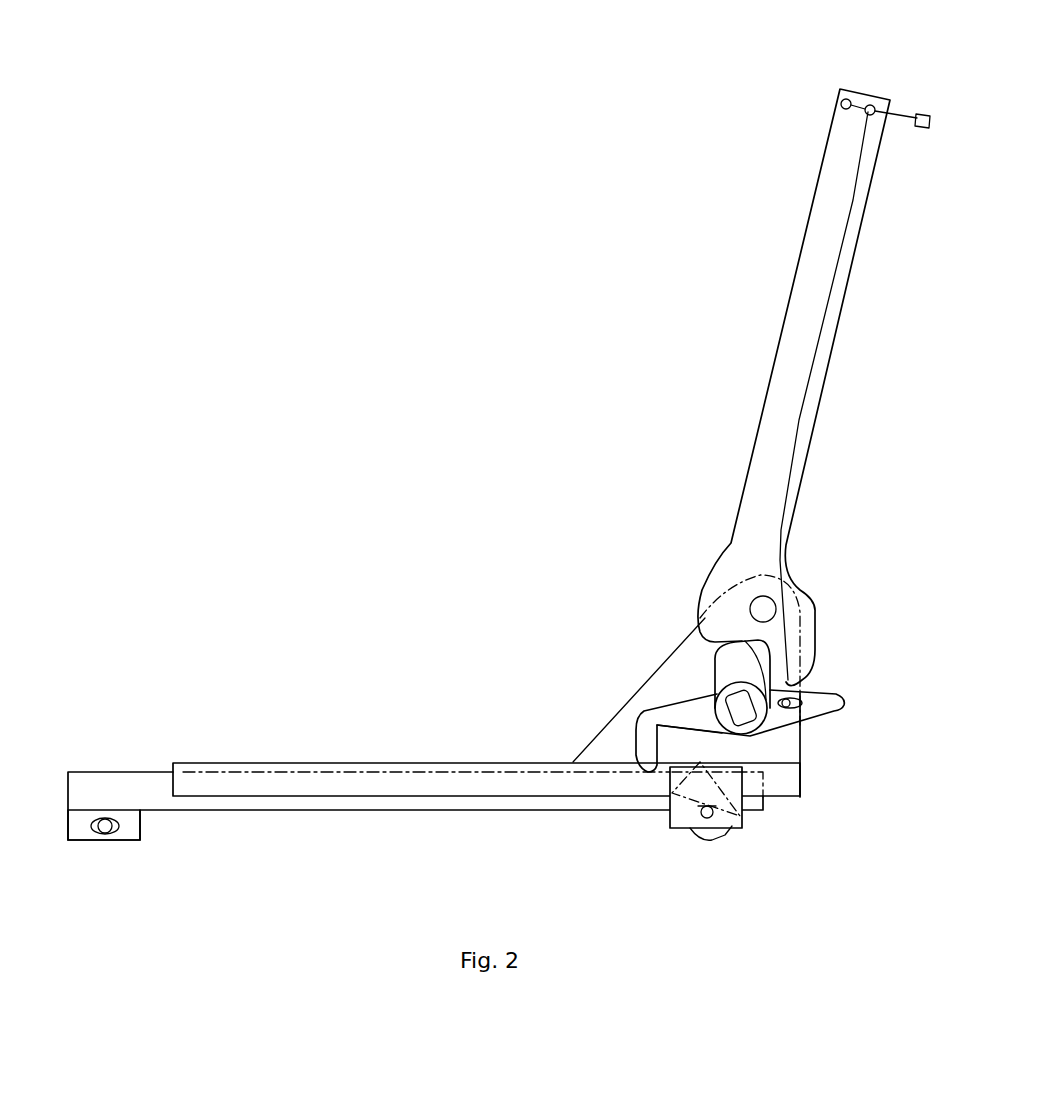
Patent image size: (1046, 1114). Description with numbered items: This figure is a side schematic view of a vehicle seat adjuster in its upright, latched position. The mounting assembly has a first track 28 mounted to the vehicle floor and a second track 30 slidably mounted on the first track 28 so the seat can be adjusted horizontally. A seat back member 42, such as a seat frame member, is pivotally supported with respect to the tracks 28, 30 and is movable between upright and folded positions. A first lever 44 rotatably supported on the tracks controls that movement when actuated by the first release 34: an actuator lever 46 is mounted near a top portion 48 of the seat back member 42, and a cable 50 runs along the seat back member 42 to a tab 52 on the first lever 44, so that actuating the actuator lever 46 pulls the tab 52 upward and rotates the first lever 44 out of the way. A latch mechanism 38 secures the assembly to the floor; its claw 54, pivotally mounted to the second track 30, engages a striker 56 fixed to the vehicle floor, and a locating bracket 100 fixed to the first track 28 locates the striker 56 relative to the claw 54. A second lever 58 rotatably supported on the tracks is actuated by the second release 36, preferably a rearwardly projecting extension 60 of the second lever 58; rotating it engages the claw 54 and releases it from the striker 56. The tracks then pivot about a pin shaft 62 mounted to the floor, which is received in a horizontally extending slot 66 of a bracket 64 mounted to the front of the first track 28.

The first track 28 is at (328, 800).
The second track 30 is at (222, 770).
The first release 34 is at (910, 95).
The second release 36 is at (856, 709).
The latch mechanism 38 is at (726, 848).
The seat back member 42 is at (782, 376).
The first lever 44 is at (718, 660).
The actuator lever 46 is at (893, 118).
The top portion 48 is at (838, 138).
The cable 50 is at (845, 283).
The tab 52 is at (781, 708).
The claw 54 is at (712, 838).
The striker 56 is at (763, 806).
The second lever 58 is at (676, 706).
The extension 60 is at (830, 695).
The pin shaft 62 is at (106, 835).
The bracket 64 is at (160, 830).
The slot 66 is at (117, 832).
The locating bracket 100 is at (672, 812).